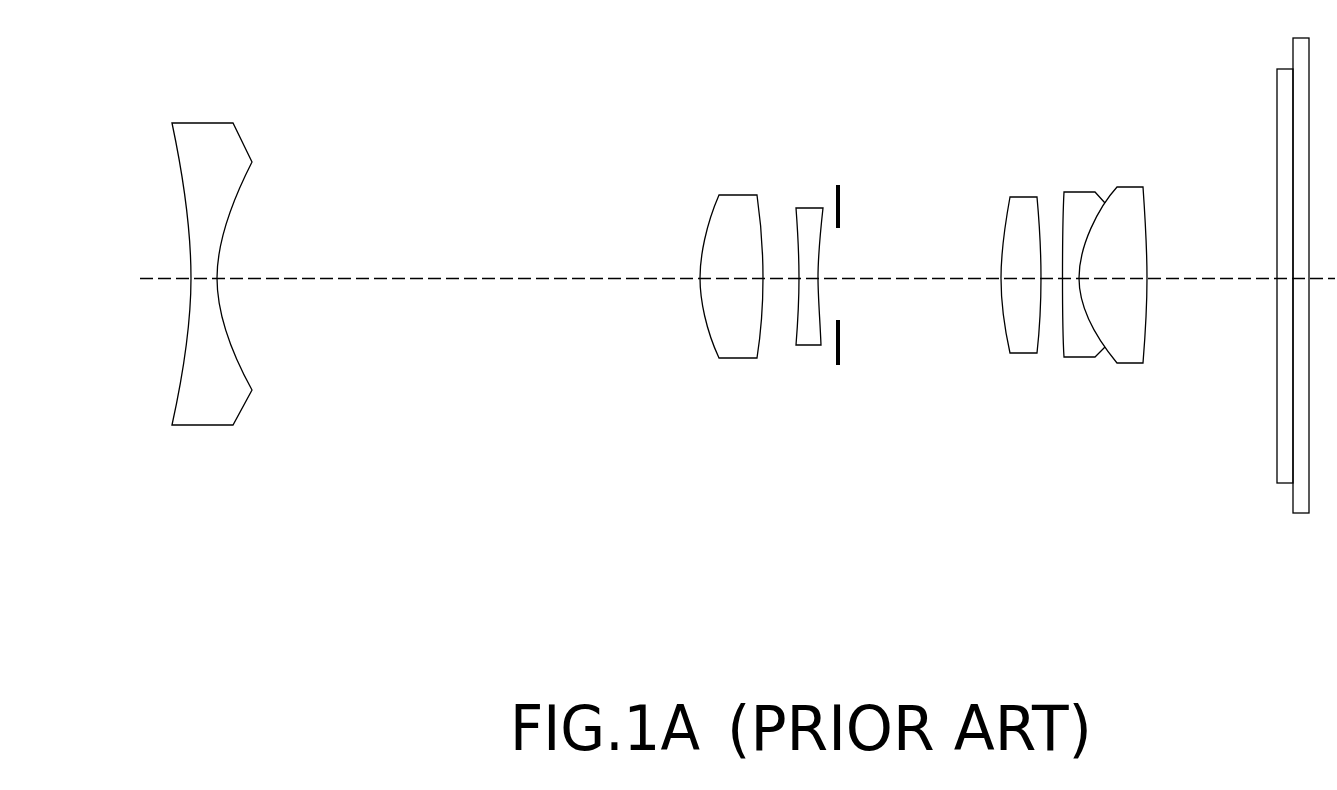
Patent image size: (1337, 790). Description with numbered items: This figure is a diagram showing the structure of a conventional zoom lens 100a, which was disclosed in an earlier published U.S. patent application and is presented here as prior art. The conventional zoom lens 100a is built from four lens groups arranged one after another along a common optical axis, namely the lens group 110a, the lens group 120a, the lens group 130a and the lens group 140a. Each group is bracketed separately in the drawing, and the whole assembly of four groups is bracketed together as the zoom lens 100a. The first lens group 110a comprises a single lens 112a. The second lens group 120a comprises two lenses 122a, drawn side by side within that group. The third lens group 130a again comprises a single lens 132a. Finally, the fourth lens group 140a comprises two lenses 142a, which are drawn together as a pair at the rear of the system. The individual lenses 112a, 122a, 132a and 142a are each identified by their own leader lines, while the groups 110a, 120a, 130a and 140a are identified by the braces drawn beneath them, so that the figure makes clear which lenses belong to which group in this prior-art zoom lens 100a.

The conventional zoom lens 100a is at (1165, 547).
The lens group 110a is at (277, 480).
The single lens 112a is at (210, 157).
The lens group 120a is at (833, 480).
The lenses 122a is at (812, 212).
The lens group 130a is at (1045, 480).
The single lens 132a is at (1027, 212).
The lens group 140a is at (1165, 480).
The lenses 142a is at (1133, 204).